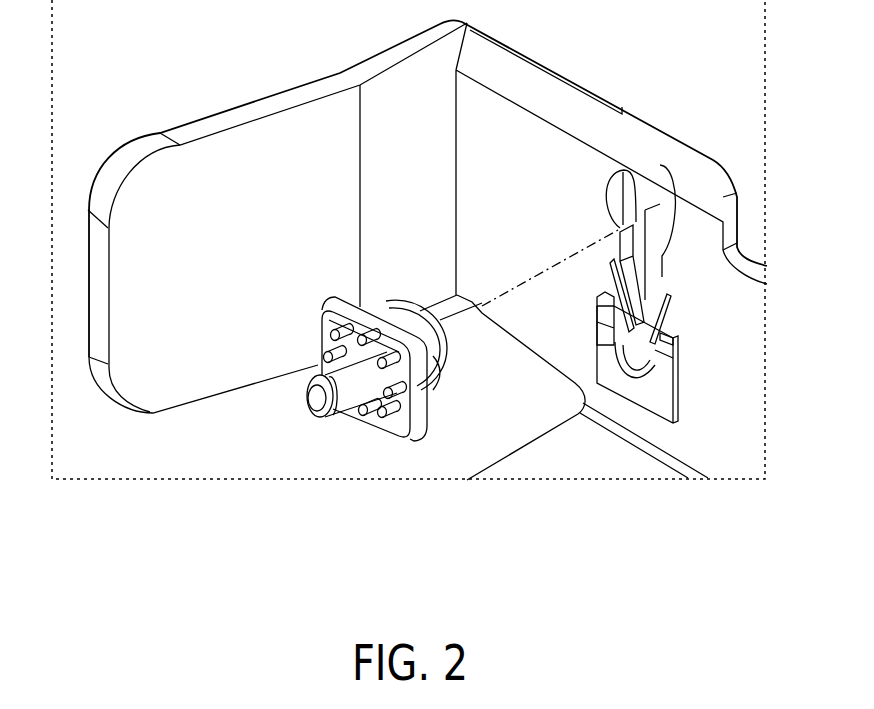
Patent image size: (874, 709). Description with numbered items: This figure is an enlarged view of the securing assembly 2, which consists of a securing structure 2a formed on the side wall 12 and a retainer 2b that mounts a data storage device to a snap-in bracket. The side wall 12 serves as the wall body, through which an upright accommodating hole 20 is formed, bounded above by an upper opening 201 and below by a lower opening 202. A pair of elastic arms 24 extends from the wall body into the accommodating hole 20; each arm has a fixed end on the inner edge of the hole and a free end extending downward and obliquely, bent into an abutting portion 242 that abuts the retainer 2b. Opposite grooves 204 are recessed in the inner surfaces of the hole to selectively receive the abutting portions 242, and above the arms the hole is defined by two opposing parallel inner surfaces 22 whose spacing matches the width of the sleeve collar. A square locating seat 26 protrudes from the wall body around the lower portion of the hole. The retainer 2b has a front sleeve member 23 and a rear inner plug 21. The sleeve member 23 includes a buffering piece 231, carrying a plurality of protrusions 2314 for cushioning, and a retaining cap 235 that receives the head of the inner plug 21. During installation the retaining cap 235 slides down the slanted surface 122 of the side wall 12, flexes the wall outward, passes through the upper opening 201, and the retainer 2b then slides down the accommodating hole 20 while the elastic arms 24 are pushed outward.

The securing assembly 2 is at (565, 548).
The securing structure 2a is at (618, 317).
The retainer 2b is at (442, 447).
The side wall 12 is at (527, 147).
The slanted surface 122 is at (638, 147).
The accommodating hole 20 is at (666, 204).
The upper opening 201 is at (600, 207).
The inner plug 21 is at (318, 365).
The parallel inner surfaces 22 is at (620, 249).
The sleeve member 23 is at (365, 322).
The buffering piece 231 is at (330, 295).
The protrusions 2314 is at (375, 417).
The retaining cap 235 is at (395, 302).
The elastic arms 24 is at (600, 297).
The abutting portion 242 is at (597, 352).
The grooves 204 is at (600, 321).
The lower opening 202 is at (655, 384).
The locating seat 26 is at (612, 370).